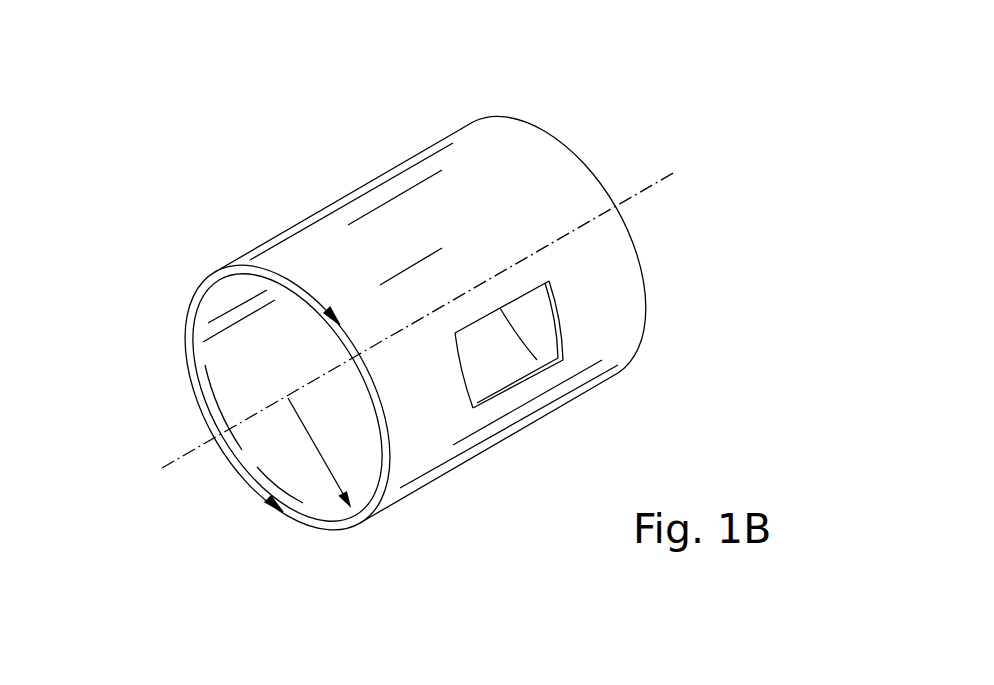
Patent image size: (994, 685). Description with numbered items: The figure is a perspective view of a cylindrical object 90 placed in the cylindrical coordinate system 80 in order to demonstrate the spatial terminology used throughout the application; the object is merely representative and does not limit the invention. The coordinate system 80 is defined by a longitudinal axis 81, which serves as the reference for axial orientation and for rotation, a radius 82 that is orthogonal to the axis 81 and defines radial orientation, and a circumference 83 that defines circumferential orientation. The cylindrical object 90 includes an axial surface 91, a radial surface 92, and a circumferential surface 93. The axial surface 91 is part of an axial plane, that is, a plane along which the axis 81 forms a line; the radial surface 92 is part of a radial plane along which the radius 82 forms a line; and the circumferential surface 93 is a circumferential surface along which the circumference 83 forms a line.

The cylindrical coordinate system 80 is at (590, 129).
The longitudinal axis 81 is at (175, 462).
The radius 82 is at (323, 456).
The circumference 83 is at (192, 295).
The object 90 is at (455, 116).
The axial surface 91 is at (538, 358).
The radial surface 92 is at (302, 517).
The circumferential surface 93 is at (393, 215).